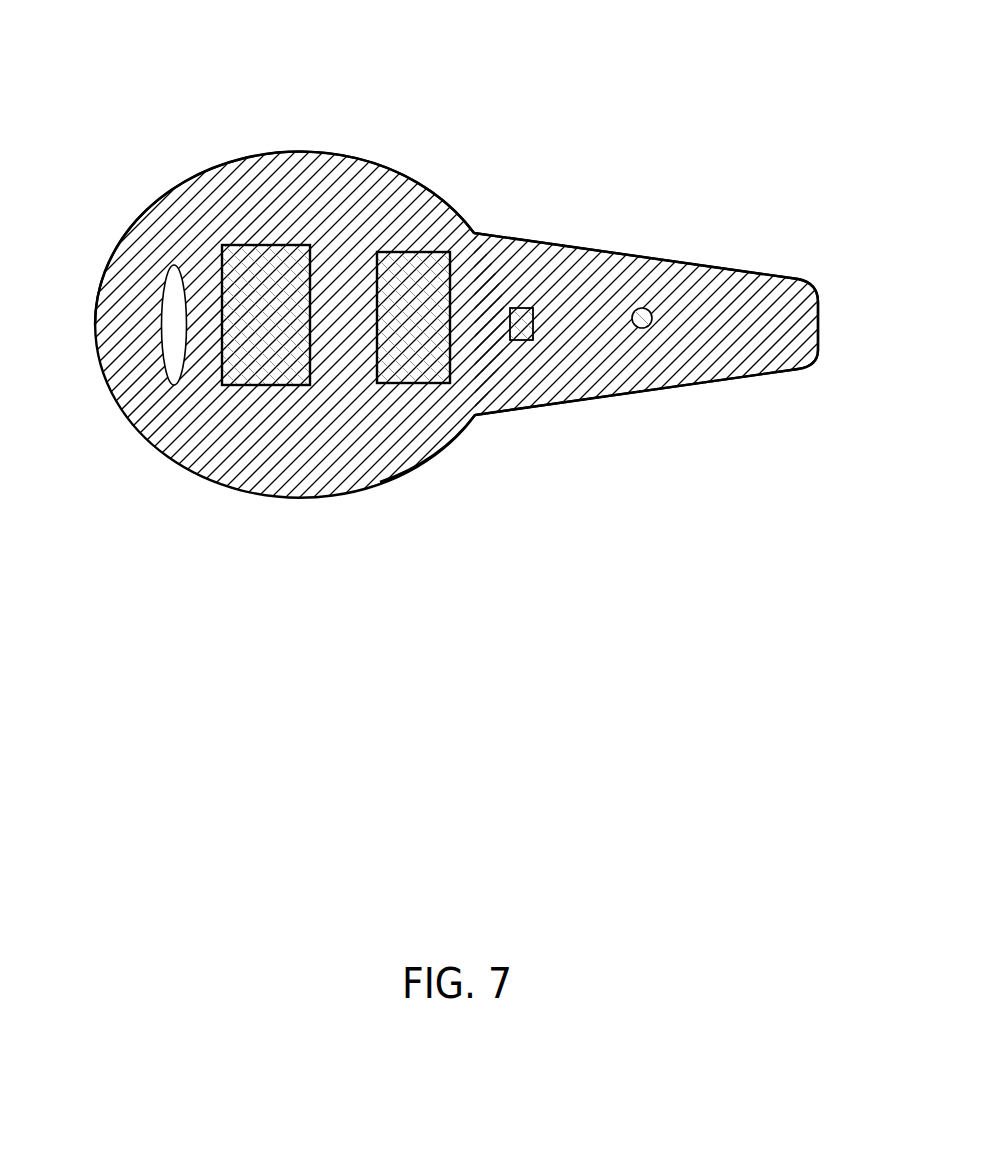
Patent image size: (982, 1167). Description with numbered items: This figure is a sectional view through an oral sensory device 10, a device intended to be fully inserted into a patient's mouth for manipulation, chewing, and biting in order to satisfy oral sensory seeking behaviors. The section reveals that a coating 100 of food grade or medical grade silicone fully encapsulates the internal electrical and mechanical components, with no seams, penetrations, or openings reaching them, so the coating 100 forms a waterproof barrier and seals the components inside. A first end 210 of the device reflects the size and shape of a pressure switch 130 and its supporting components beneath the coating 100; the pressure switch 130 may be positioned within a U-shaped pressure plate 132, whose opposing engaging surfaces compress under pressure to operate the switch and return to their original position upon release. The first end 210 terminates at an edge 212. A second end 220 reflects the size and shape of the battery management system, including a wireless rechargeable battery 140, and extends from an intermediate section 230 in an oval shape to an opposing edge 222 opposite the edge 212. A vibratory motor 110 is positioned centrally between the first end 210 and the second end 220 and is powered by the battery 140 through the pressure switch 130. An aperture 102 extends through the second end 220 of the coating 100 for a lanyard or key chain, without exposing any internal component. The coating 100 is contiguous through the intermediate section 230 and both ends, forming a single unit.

The oral sensory device 10 is at (127, 48).
The coating 100 is at (583, 271).
The aperture 102 is at (180, 323).
The vibratory motor 110 is at (413, 275).
The pressure switch 130 is at (643, 320).
The U-shaped pressure plate 132 is at (518, 313).
The wireless rechargeable battery 140 is at (243, 267).
The first end 210 is at (595, 373).
The edge 212 is at (820, 305).
The second end 220 is at (202, 435).
The opposing edge 222 is at (110, 265).
The intermediate section 230 is at (415, 480).